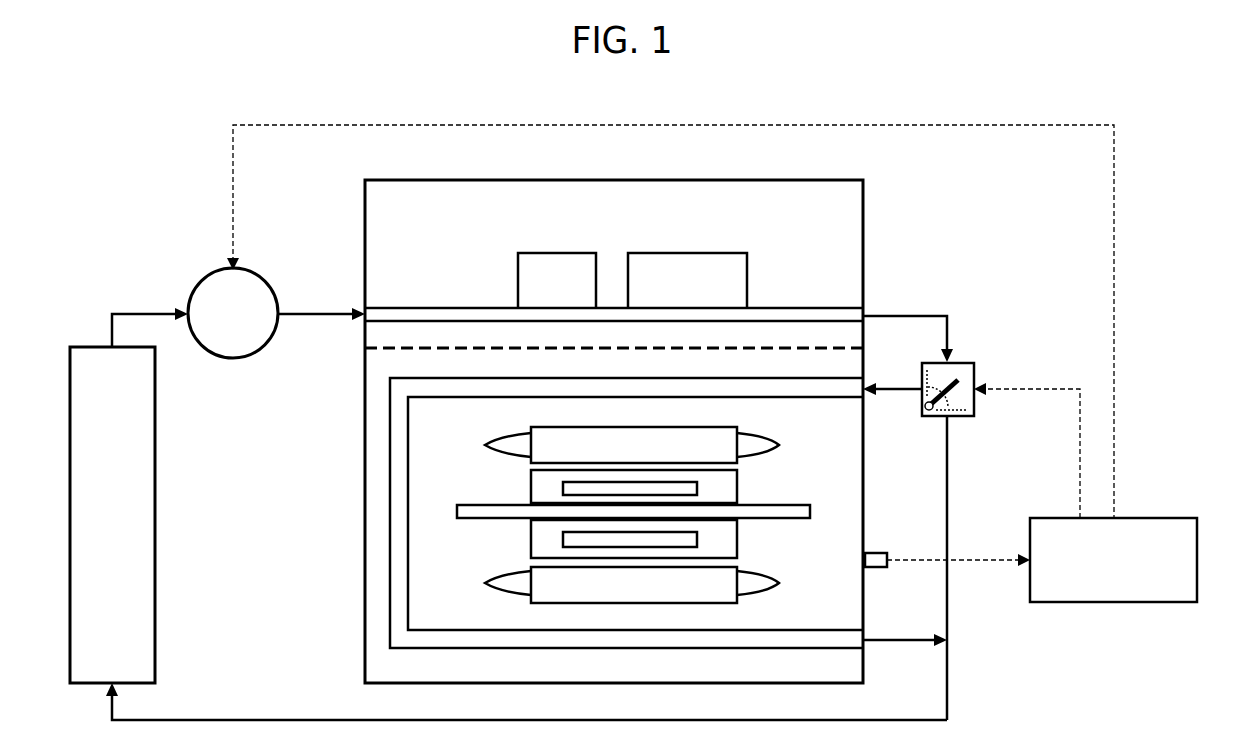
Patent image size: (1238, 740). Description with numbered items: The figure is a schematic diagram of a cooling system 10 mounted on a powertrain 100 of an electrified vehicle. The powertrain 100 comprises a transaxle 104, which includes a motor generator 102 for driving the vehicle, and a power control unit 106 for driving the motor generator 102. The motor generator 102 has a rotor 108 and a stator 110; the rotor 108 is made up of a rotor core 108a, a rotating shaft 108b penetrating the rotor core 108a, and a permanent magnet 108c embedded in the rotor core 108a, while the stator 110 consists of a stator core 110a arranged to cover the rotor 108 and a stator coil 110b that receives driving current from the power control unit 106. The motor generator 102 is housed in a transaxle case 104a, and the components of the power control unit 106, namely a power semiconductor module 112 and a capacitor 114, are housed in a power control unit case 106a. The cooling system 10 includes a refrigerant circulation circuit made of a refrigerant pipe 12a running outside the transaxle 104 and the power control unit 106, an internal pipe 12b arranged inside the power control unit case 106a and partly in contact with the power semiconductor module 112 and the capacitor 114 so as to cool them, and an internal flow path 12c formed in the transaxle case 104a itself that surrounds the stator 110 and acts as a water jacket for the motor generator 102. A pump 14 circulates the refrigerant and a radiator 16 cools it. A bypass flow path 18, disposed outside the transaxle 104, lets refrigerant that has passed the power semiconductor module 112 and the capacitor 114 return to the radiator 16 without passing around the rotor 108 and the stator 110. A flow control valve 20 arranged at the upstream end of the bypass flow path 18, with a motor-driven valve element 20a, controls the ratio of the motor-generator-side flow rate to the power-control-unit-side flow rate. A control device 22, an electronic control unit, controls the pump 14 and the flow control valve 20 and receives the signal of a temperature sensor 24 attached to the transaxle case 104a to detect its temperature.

The cooling system 10 is at (126, 240).
The refrigerant pipe 12a is at (156, 313).
The internal pipe 12b is at (466, 307).
The internal flow path 12c is at (392, 572).
The pump 14 is at (212, 276).
The radiator 16 is at (84, 346).
The bypass flow path 18 is at (948, 504).
The flow control valve 20 is at (986, 388).
The valve element 20a is at (955, 412).
The control device 22 is at (1140, 518).
The temperature sensor 24 is at (878, 553).
The powertrain 100 is at (266, 390).
The motor generator 102 is at (446, 590).
The transaxle 104 is at (352, 464).
The transaxle case 104a is at (364, 520).
The power control unit 106 is at (348, 268).
The power control unit case 106a is at (364, 230).
The rotor 108 is at (632, 504).
The rotor core 108a is at (737, 486).
The rotating shaft 108b is at (745, 506).
The permanent magnet 108c is at (563, 540).
The stator 110 is at (511, 425).
The stator core 110a is at (740, 567).
The stator coil 110b is at (762, 596).
The power semiconductor module 112 is at (687, 252).
The capacitor 114 is at (560, 252).